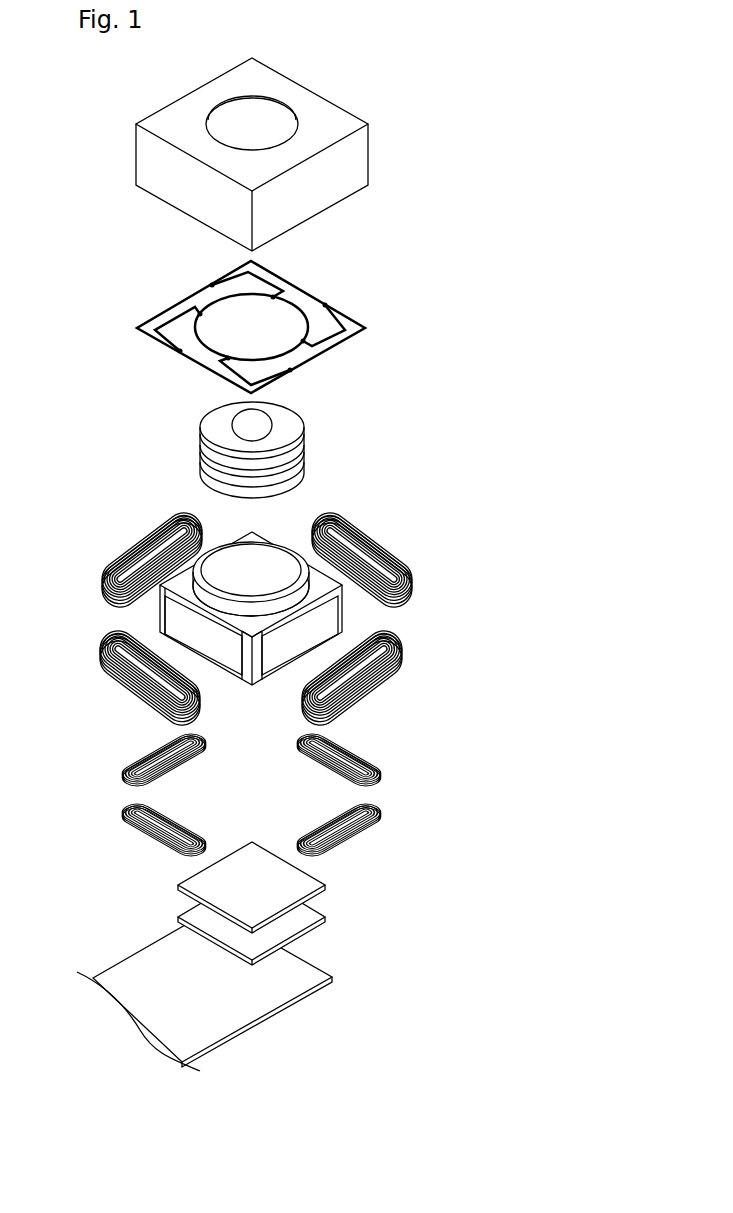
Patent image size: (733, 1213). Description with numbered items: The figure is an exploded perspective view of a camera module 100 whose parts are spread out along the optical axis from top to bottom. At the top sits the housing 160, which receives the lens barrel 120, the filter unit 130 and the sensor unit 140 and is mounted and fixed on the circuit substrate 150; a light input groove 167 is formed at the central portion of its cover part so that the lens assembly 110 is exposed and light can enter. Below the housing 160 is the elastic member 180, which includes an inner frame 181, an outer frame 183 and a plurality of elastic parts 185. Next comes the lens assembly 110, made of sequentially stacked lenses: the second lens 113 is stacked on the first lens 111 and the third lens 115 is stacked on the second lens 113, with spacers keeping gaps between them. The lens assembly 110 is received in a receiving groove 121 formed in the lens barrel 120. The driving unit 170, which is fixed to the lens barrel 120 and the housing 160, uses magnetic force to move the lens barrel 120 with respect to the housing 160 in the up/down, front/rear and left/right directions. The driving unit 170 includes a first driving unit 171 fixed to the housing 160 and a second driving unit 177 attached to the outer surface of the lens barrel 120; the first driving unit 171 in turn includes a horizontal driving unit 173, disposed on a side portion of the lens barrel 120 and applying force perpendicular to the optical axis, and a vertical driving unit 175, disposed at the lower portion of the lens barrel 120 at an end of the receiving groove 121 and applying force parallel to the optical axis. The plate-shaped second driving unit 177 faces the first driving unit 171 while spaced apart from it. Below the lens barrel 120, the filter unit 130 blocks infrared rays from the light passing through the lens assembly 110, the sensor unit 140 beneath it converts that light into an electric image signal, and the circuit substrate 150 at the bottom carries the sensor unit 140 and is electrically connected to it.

The camera module 100 is at (580, 80).
The lens assembly 110 is at (291, 433).
The first lens 111 is at (302, 472).
The second lens 113 is at (297, 460).
The third lens 115 is at (302, 442).
The lens barrel 120 is at (301, 585).
The receiving groove 121 is at (260, 568).
The filter unit 130 is at (313, 880).
The sensor unit 140 is at (320, 910).
The circuit substrate 150 is at (130, 970).
The housing 160 is at (268, 147).
The light input groove 167 is at (256, 115).
The driving unit 170 is at (294, 683).
The first driving unit 171 is at (294, 683).
The horizontal driving unit 173 is at (402, 655).
The vertical driving unit 175 is at (370, 762).
The second driving unit 177 is at (330, 622).
The elastic member 180 is at (258, 315).
The inner frame 181 is at (195, 306).
The outer frame 183 is at (152, 323).
The elastic parts 185 is at (227, 371).